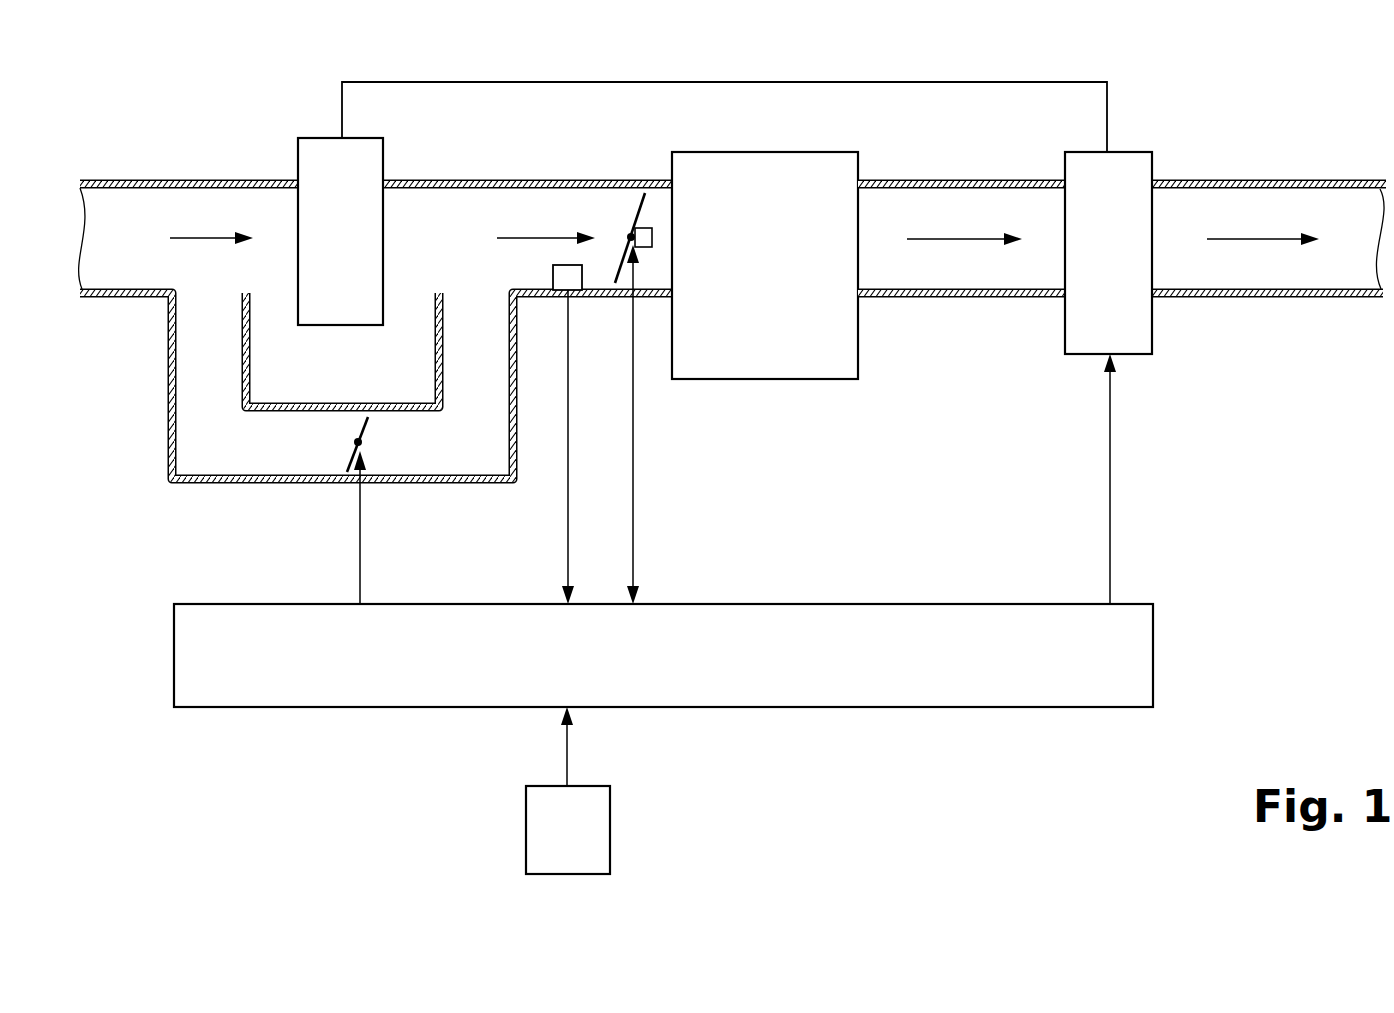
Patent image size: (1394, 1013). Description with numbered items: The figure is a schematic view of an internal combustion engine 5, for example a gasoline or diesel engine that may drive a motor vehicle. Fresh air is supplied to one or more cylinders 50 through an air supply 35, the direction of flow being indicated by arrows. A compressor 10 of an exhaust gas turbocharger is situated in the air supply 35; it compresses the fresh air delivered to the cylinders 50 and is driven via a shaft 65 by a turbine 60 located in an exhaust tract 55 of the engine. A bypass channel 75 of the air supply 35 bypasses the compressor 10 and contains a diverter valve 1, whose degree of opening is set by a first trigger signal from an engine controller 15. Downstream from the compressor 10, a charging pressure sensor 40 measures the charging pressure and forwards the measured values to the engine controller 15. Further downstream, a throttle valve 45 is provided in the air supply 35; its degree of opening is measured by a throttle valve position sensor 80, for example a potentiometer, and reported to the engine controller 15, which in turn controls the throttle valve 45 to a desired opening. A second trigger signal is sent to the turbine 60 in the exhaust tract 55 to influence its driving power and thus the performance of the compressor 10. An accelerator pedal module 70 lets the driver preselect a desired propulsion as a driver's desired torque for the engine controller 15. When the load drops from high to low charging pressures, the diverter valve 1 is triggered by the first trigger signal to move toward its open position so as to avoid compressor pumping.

The internal combustion engine 5 is at (1313, 128).
The air supply 35 is at (198, 208).
The compressor 10 is at (373, 157).
The shaft 65 is at (990, 82).
The turbine 60 is at (1137, 151).
The cylinder 50 is at (767, 360).
The exhaust tract 55 is at (995, 268).
The bypass channel 75 is at (210, 460).
The diverter valve 1 is at (354, 433).
The charging pressure sensor 40 is at (565, 287).
The throttle valve 45 is at (633, 205).
The throttle valve position sensor 80 is at (652, 247).
The engine controller 15 is at (995, 627).
The accelerator pedal module 70 is at (600, 829).